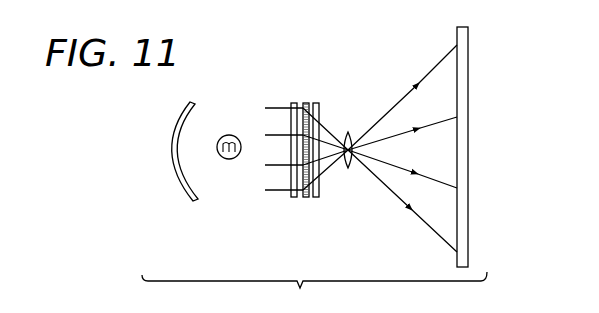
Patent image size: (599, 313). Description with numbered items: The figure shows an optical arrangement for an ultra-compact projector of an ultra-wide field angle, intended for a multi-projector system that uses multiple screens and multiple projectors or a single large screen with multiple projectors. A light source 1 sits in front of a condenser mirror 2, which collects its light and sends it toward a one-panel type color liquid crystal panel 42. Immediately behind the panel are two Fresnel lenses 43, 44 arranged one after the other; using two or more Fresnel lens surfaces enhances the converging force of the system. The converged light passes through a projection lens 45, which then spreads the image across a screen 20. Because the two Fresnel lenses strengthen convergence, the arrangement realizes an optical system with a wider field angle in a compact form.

The light source 1 is at (230, 160).
The condenser mirror 2 is at (183, 193).
The screen 20 is at (457, 33).
The color liquid crystal panel 42 is at (293, 103).
The Fresnel lens 43 is at (306, 103).
The Fresnel lens 44 is at (319, 106).
The projection lens 45 is at (347, 168).